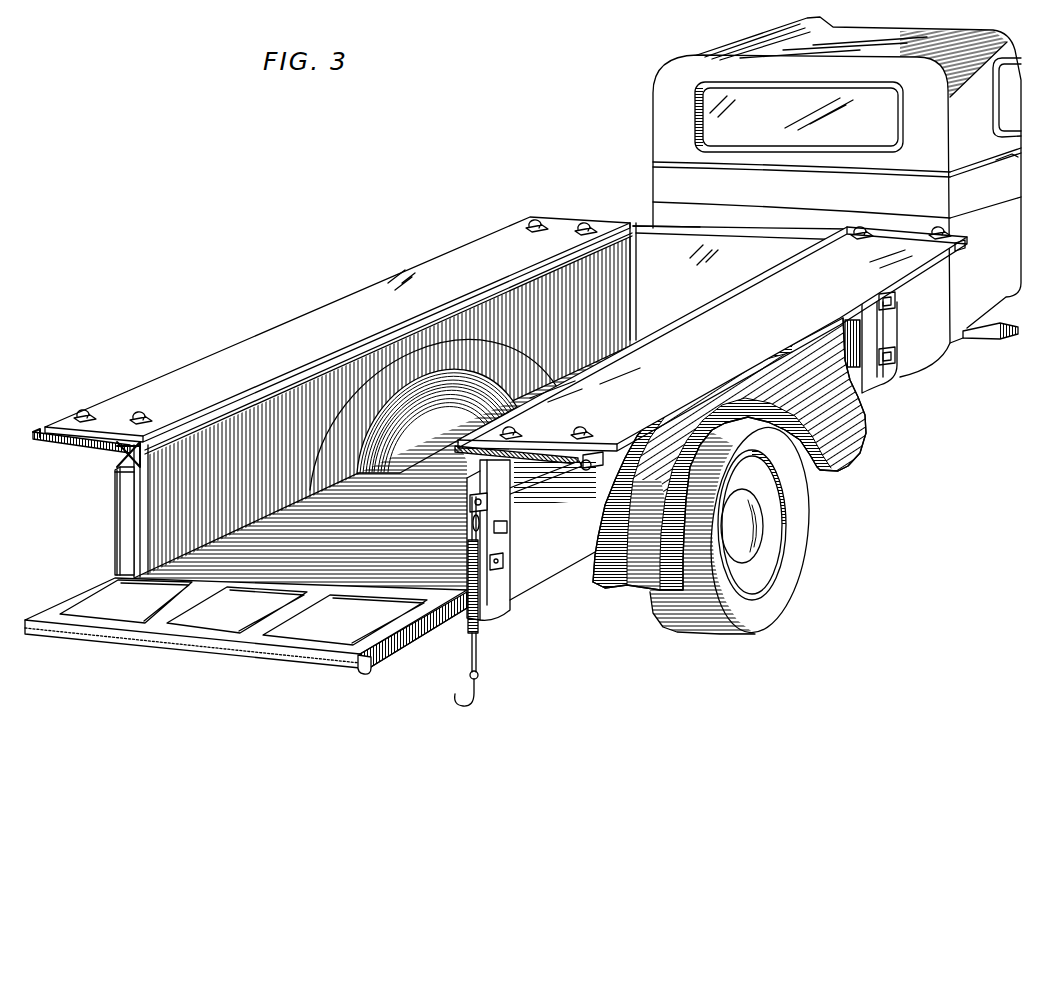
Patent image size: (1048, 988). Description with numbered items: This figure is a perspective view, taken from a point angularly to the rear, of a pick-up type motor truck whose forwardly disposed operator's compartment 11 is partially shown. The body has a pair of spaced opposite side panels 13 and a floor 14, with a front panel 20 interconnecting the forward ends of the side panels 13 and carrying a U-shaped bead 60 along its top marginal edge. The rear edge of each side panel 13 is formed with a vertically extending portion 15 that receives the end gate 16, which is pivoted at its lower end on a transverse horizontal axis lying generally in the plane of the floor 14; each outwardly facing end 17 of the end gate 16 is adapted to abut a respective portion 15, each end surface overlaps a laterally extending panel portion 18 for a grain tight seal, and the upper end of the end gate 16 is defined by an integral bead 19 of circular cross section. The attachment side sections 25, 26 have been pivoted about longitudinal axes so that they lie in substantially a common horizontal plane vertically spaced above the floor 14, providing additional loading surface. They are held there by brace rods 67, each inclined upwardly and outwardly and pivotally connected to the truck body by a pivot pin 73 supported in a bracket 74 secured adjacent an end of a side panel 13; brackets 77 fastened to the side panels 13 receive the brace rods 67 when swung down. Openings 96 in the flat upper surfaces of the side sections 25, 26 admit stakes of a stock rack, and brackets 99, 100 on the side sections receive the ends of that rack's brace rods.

The operator's compartment 11 is at (743, 48).
The side panels 13 is at (240, 432).
The floor 14 is at (427, 536).
The vertically extending portion 15 is at (123, 516).
The end gate 16 is at (393, 616).
The outwardly facing end 17 is at (393, 650).
The laterally extending panel portion 18 is at (130, 492).
The bead 19 is at (363, 674).
The front panel 20 is at (670, 270).
The side section 25 is at (418, 277).
The side section 26 is at (887, 267).
The U-shaped bead 60 is at (647, 227).
The brace rods 67 is at (117, 457).
The pivot pin 73 is at (504, 527).
The bracket 74 is at (510, 512).
The brackets 77 is at (503, 571).
The openings 96 is at (603, 458).
The bracket 99 is at (95, 414).
The bracket 100 is at (150, 413).